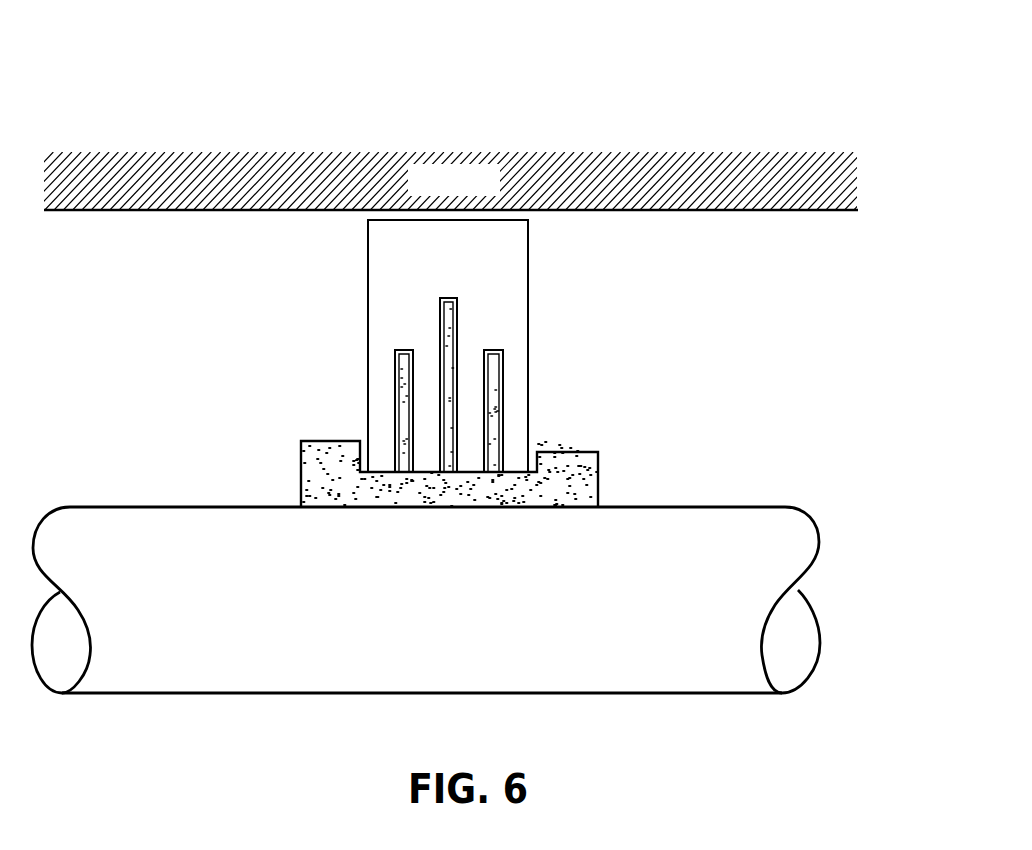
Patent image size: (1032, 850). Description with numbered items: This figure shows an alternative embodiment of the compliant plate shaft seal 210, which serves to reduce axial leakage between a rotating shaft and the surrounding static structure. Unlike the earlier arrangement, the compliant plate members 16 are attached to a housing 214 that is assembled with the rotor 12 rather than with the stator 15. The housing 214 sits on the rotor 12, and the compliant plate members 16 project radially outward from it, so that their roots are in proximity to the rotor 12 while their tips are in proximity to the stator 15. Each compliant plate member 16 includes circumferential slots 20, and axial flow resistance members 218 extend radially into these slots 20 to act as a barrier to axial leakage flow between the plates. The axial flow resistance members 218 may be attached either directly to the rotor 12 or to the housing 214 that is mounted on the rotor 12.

The seal 210 is at (508, 80).
The stator 15 is at (408, 160).
The compliant plate members 16 is at (480, 250).
The circumferential slot 20 is at (446, 298).
The axial flow resistance member 218 is at (456, 414).
The housing 214 is at (343, 493).
The rotor 12 is at (720, 550).